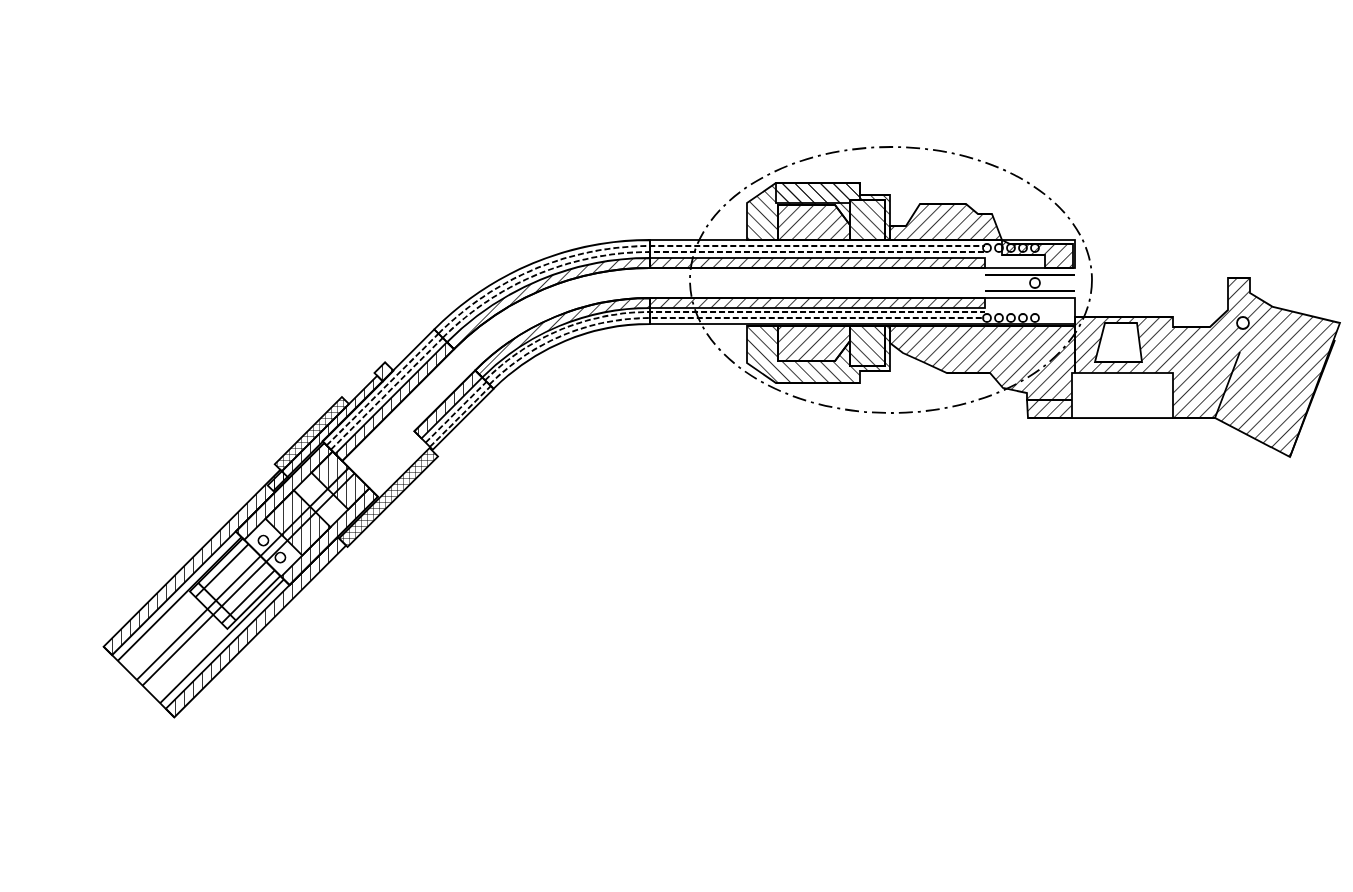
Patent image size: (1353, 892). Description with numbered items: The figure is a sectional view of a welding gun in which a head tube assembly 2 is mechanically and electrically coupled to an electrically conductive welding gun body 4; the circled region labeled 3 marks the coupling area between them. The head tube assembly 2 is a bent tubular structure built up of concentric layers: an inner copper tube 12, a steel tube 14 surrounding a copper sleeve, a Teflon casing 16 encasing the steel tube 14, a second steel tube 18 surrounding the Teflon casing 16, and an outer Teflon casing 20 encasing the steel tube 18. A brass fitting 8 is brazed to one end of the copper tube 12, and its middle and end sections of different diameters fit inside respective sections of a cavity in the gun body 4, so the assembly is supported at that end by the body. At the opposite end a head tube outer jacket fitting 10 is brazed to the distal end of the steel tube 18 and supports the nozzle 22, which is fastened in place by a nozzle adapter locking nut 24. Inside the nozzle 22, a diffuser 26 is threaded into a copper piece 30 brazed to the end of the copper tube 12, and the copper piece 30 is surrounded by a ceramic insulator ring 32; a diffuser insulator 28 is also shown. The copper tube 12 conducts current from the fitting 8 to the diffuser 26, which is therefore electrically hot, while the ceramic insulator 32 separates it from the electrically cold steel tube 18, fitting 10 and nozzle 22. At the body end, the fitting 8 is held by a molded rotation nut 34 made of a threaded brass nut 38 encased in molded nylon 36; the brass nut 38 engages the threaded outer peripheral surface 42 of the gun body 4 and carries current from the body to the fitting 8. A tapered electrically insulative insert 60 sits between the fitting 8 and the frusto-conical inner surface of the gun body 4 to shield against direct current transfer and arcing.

The head tube assembly 2 is at (508, 214).
The connector region 3 is at (998, 163).
The welding gun body 4 is at (1312, 320).
The fitting 8 is at (910, 235).
The head tube outer jacket fitting 10 is at (388, 364).
The inner copper tube 12 is at (513, 307).
The steel tube 14 is at (578, 328).
The Teflon casing 16 is at (478, 302).
The steel tube 18 is at (643, 327).
The outer Teflon casing 20 is at (626, 240).
The nozzle 22 is at (190, 556).
The nozzle adapter locking nut 24 is at (397, 493).
The diffuser 26 is at (245, 610).
The diffuser insulator 28 is at (330, 555).
The copper piece 30 is at (345, 410).
The ceramic insulator ring 32 is at (297, 462).
The rotation nut 34 is at (812, 178).
The molded nylon 36 is at (765, 195).
The brass nut 38 is at (848, 183).
The threaded outer peripheral surface 42 is at (872, 190).
The electrically insulative insert 60 is at (836, 382).